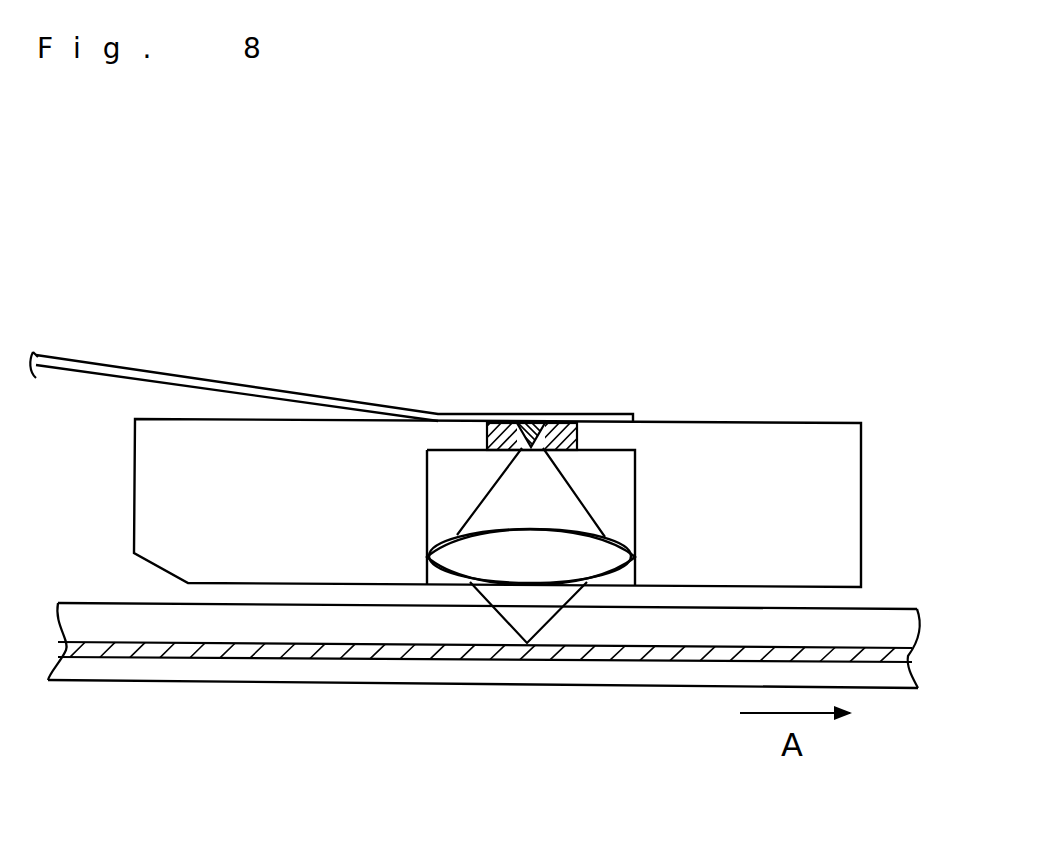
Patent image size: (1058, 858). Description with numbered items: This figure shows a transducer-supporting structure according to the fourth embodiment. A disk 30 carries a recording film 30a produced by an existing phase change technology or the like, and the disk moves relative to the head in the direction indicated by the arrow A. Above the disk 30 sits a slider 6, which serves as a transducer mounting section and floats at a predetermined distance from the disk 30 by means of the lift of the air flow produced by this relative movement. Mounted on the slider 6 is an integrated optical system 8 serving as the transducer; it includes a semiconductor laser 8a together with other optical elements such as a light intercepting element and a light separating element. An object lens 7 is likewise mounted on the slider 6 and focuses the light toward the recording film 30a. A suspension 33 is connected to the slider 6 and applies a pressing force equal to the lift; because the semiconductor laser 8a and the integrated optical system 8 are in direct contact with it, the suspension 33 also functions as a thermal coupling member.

The slider 6 is at (760, 421).
The object lens 7 is at (567, 530).
The integrated optical system 8 is at (578, 422).
The semiconductor laser 8a is at (535, 422).
The disk 30 is at (475, 687).
The recording film 30a is at (865, 653).
The suspension 33 is at (227, 385).